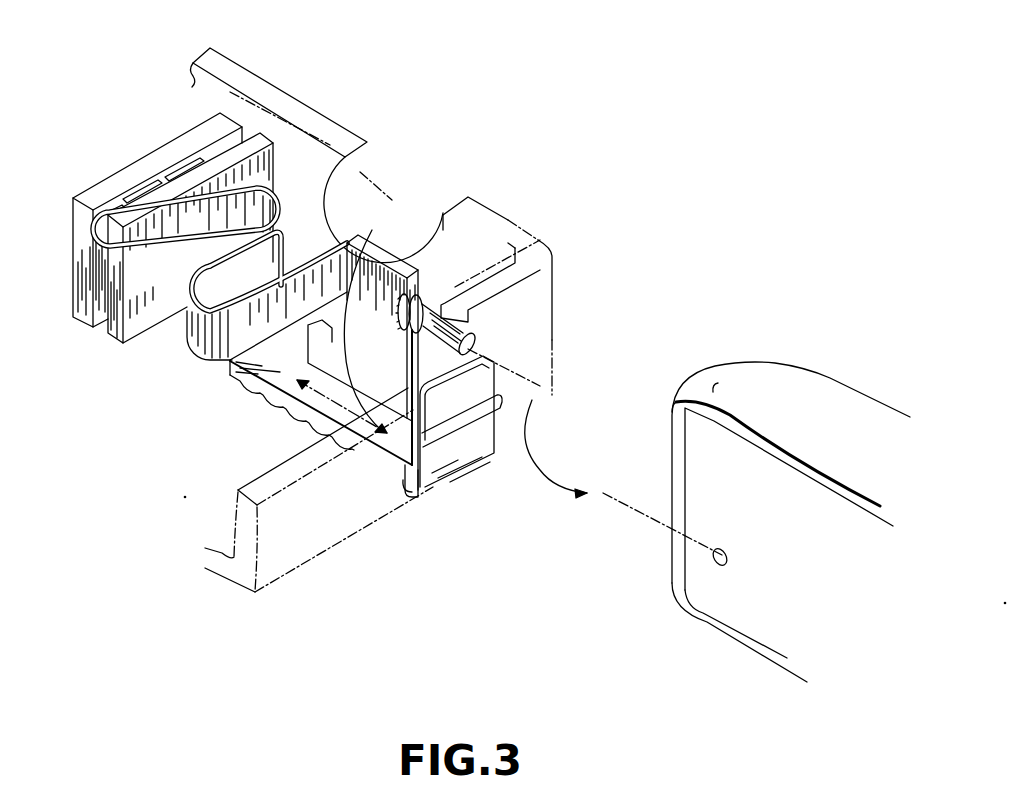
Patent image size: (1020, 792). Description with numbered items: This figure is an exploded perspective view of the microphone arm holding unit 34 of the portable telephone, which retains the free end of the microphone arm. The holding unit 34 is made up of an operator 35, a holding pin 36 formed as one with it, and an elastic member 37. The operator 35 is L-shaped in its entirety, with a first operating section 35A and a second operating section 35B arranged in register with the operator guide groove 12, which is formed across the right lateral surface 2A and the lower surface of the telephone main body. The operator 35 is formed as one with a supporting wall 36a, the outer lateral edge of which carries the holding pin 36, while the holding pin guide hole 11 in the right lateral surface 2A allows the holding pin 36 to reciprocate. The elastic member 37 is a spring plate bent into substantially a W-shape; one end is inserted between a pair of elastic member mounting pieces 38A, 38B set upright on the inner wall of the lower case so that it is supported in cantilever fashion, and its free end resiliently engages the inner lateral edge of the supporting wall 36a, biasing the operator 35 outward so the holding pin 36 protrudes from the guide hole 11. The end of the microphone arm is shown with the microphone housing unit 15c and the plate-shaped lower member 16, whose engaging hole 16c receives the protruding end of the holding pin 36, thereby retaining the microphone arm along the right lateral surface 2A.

The right lateral surface 2A is at (281, 547).
The holding pin guide hole 11 is at (455, 318).
The operator guide groove 12 is at (413, 490).
The microphone housing unit 15c is at (838, 387).
The lower member 16 is at (757, 622).
The engaging hole 16c is at (713, 563).
The microphone arm holding unit 34 is at (150, 447).
The operator 35 is at (275, 400).
The first operating section 35A is at (463, 453).
The second operating section 35B is at (365, 463).
The holding pin 36 is at (420, 298).
The supporting wall 36a is at (367, 263).
The elastic member 37 is at (200, 330).
The elastic member mounting piece 38A is at (105, 177).
The elastic member mounting piece 38B is at (218, 158).